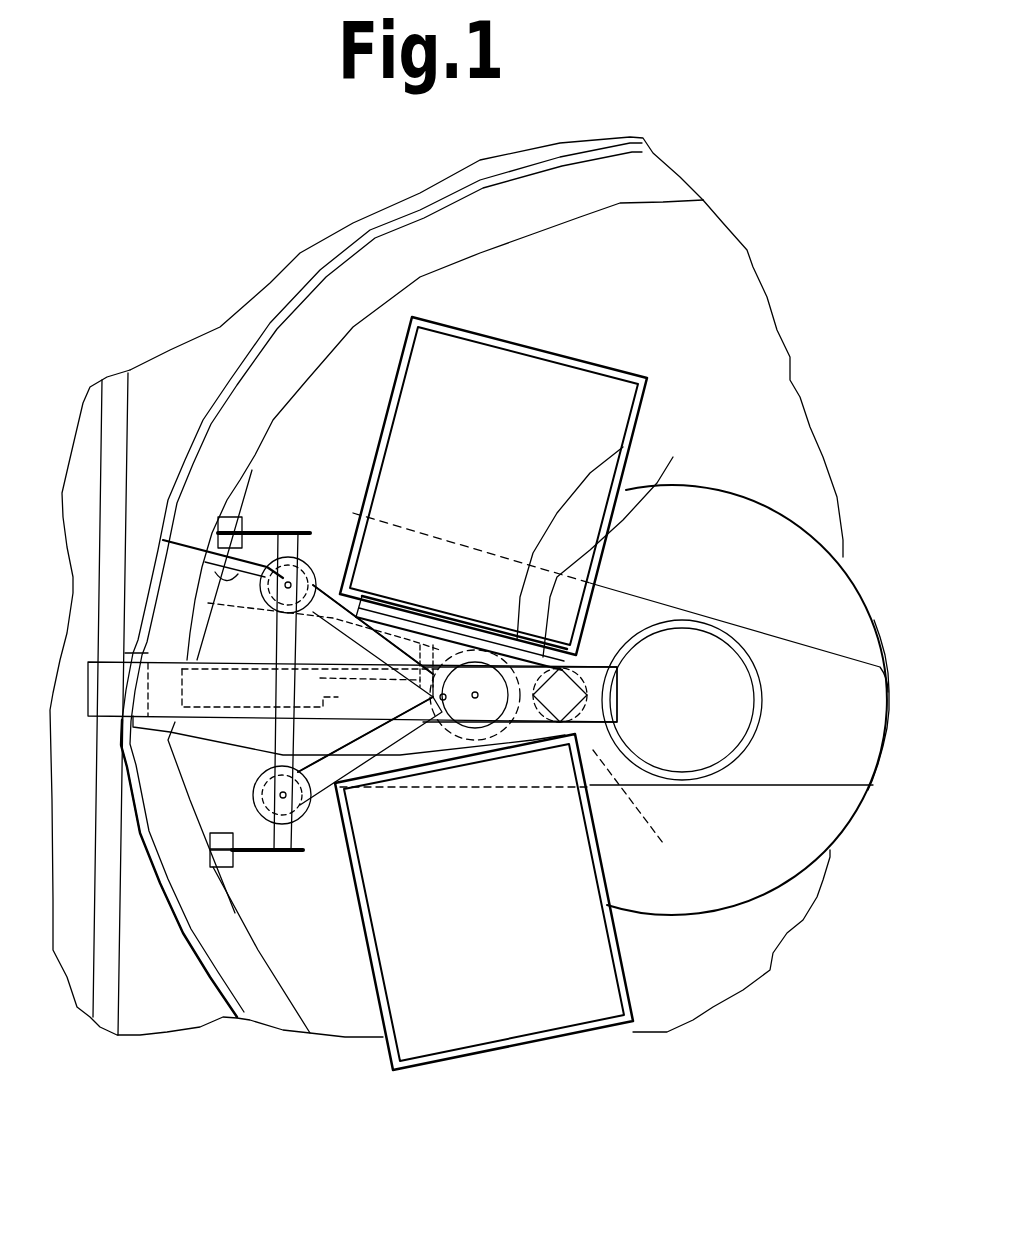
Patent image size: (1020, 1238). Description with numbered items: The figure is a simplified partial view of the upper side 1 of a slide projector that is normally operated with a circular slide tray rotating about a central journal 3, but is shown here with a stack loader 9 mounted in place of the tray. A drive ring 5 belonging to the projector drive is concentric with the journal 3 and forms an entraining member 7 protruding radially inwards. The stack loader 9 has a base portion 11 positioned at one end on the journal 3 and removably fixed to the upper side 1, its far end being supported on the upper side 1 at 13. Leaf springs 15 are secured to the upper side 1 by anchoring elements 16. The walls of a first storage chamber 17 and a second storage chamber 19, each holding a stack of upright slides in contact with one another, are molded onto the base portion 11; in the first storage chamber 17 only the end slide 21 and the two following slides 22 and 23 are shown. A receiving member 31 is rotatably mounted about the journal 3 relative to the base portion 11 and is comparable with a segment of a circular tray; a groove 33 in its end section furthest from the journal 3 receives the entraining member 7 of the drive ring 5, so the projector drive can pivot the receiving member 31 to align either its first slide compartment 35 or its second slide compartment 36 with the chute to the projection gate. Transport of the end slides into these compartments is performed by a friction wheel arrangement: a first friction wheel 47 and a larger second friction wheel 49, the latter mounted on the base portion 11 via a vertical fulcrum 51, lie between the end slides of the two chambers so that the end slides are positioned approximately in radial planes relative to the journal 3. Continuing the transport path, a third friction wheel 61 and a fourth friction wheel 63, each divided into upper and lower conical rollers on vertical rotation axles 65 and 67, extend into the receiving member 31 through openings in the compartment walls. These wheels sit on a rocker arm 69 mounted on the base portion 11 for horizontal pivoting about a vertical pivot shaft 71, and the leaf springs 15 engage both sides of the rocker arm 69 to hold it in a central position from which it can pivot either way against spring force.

The upper side 1 is at (222, 337).
The central journal 3 is at (670, 624).
The drive ring 5 is at (227, 390).
The entraining member 7 is at (158, 636).
The stack loader 9 is at (718, 398).
The base portion 11 is at (602, 697).
The support point 13 is at (117, 718).
The leaf springs 15 is at (263, 530).
The anchoring elements 16 is at (233, 520).
The first storage chamber 17 is at (630, 412).
The second storage chamber 19 is at (615, 962).
The end slide 21 is at (693, 500).
The slide 22 is at (610, 541).
The slide 23 is at (633, 447).
The receiving member 31 is at (170, 740).
The groove 33 is at (150, 698).
The first slide compartment 35 is at (163, 540).
The second slide compartment 36 is at (252, 690).
The first friction wheel 47 is at (642, 814).
The second friction wheel 49 is at (477, 700).
The vertical fulcrum 51 is at (500, 733).
The third friction wheel 61 is at (320, 572).
The fourth friction wheel 63 is at (253, 810).
The vertical rotation axle 65 is at (310, 570).
The vertical rotation axle 67 is at (345, 828).
The rocker arm 69 is at (280, 760).
The vertical pivot shaft 71 is at (452, 720).